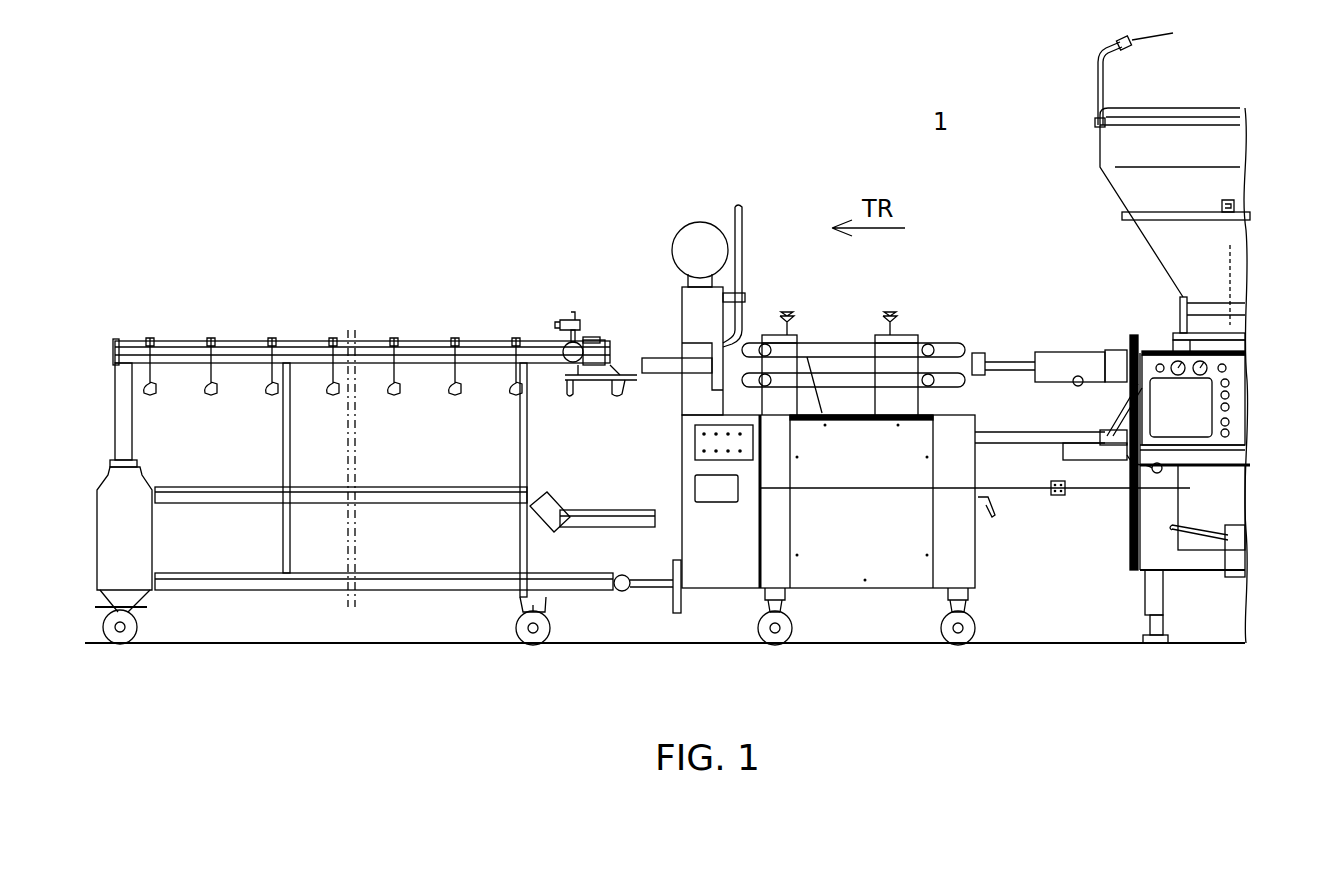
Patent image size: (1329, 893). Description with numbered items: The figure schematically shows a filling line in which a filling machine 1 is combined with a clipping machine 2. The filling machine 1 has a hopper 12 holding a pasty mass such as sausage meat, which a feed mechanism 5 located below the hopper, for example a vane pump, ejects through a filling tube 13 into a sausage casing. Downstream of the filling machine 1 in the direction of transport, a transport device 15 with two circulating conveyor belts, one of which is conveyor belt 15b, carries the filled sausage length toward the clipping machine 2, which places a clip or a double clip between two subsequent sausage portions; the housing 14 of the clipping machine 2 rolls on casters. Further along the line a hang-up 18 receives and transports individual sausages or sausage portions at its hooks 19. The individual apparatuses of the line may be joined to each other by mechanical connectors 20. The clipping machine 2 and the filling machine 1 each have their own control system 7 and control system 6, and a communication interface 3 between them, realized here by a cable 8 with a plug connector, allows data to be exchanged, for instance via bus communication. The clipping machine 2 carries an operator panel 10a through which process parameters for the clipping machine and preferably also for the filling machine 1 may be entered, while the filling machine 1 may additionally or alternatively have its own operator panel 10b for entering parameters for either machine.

The filling machine 1 is at (670, 340).
The clipping machine 2 is at (700, 222).
The communication interface 3 is at (1056, 497).
The feed mechanism 5 is at (1245, 353).
The control system of the filling machine 6 is at (1222, 504).
The control system of the clipping machine 7 is at (714, 502).
The cable 8 is at (1083, 490).
The operator panel of the clipping machine 10a is at (695, 440).
The operator panel of the filling machine 10b is at (1200, 412).
The hopper 12 is at (1106, 186).
The filling tube 13 is at (1007, 373).
The clipping machine 14 is at (828, 580).
The transport device 15 is at (831, 345).
The conveyor belt 15b is at (848, 387).
The hang-up 18 is at (308, 340).
The hooks 19 is at (272, 395).
The mechanical connectors 20 is at (1000, 445).